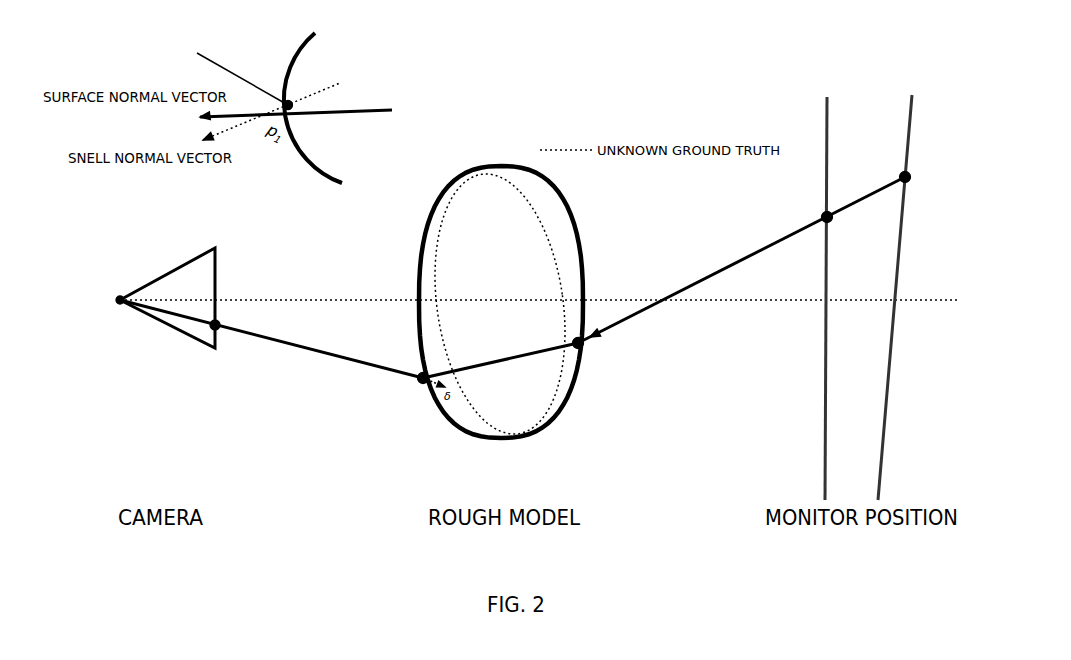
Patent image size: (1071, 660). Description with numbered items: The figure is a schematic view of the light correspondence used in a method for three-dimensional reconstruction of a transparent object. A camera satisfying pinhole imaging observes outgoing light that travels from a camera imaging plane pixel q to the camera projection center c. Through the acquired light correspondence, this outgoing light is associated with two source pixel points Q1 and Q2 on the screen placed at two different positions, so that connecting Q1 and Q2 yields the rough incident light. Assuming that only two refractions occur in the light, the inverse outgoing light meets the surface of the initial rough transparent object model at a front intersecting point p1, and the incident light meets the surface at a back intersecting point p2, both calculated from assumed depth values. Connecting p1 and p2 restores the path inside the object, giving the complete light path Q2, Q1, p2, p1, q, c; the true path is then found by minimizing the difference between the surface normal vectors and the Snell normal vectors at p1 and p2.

The camera projection center c is at (122, 314).
The camera imaging plane pixel q is at (221, 337).
The front intersecting point p1 is at (414, 392).
The back intersecting point p2 is at (591, 358).
The first source pixel point on the screen Q1 is at (810, 206).
The second source pixel point on the screen Q2 is at (919, 181).